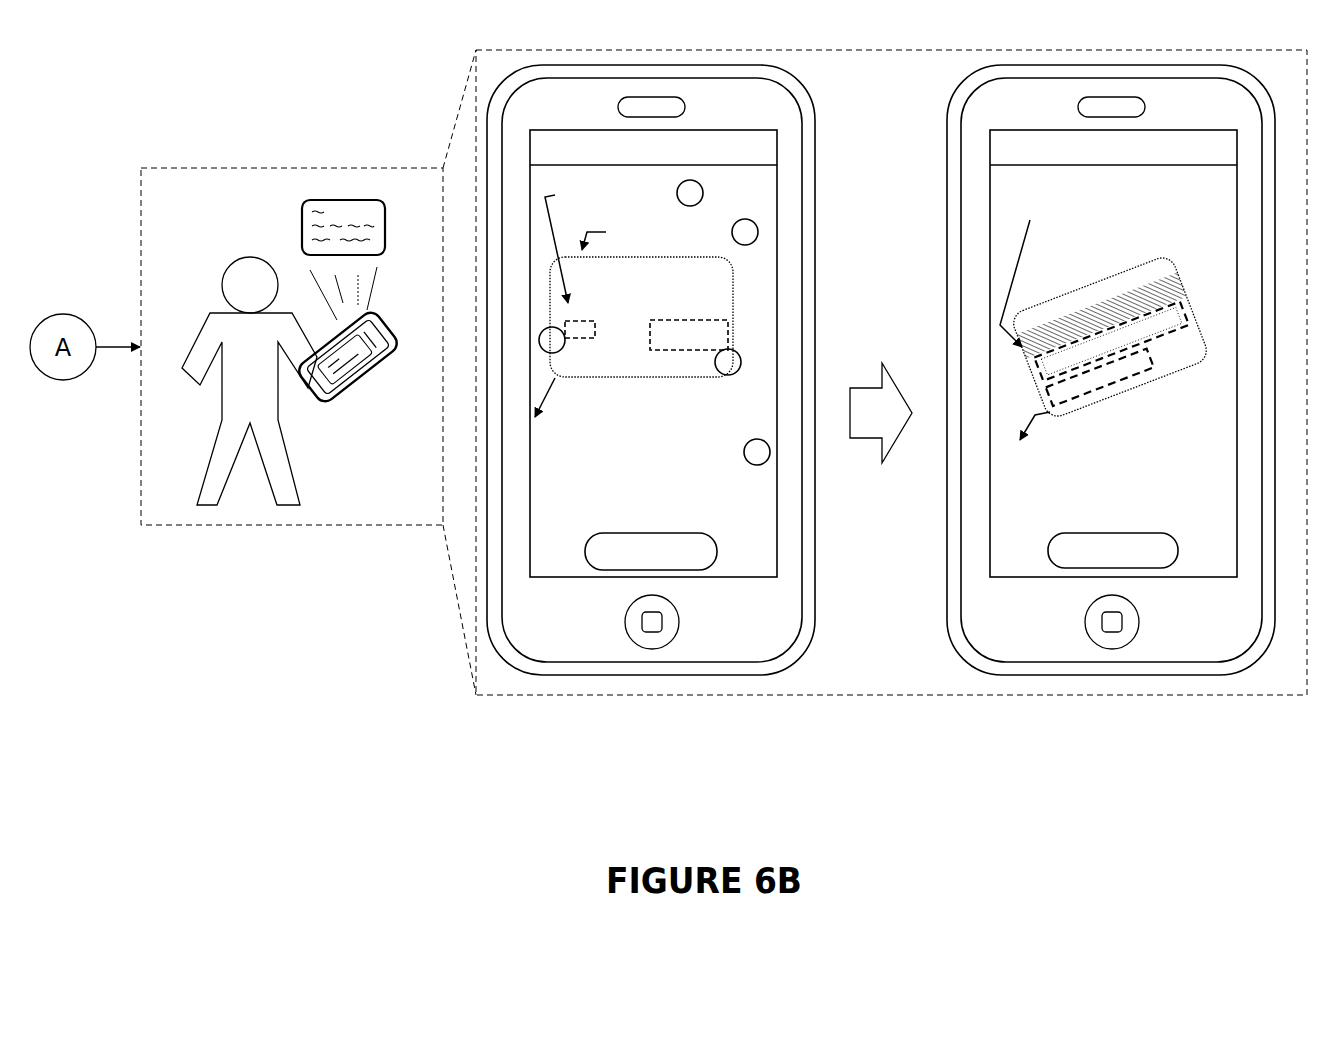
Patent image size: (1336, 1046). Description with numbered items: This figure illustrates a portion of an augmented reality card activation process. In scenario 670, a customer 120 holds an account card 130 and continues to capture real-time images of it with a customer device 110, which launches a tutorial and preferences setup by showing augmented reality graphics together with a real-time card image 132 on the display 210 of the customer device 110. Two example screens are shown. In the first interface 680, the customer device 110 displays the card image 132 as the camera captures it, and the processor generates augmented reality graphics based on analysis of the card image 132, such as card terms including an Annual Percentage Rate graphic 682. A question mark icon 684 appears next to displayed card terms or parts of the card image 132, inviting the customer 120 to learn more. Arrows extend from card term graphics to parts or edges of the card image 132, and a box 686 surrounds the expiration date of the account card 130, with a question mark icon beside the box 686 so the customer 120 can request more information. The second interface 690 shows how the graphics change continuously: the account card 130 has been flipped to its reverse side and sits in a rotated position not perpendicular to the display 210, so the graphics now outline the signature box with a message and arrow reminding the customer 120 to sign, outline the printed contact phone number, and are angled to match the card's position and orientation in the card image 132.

The scenario 670 is at (278, 168).
The account card 130 is at (295, 217).
The customer 120 is at (232, 396).
The display 210 is at (377, 358).
The customer device 110 is at (345, 413).
The first interface 680 is at (705, 130).
The Annual Percentage Rate graphic 682 is at (698, 215).
The question mark icon 684 is at (760, 230).
The card image 132 is at (738, 287).
The box 686 is at (728, 323).
The second interface 690 is at (1150, 128).